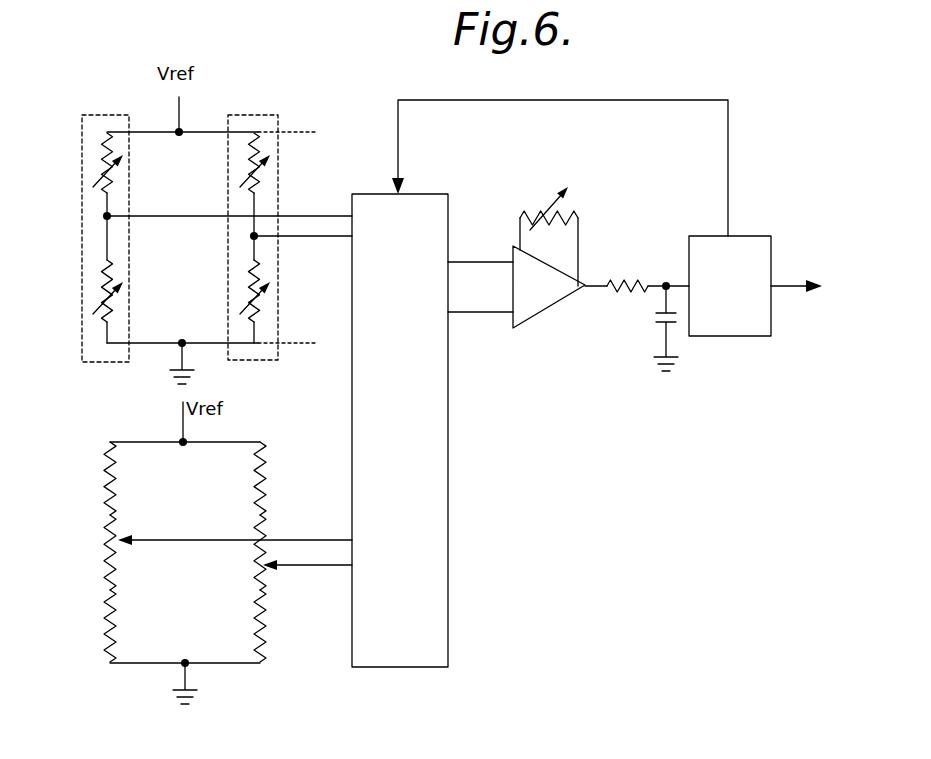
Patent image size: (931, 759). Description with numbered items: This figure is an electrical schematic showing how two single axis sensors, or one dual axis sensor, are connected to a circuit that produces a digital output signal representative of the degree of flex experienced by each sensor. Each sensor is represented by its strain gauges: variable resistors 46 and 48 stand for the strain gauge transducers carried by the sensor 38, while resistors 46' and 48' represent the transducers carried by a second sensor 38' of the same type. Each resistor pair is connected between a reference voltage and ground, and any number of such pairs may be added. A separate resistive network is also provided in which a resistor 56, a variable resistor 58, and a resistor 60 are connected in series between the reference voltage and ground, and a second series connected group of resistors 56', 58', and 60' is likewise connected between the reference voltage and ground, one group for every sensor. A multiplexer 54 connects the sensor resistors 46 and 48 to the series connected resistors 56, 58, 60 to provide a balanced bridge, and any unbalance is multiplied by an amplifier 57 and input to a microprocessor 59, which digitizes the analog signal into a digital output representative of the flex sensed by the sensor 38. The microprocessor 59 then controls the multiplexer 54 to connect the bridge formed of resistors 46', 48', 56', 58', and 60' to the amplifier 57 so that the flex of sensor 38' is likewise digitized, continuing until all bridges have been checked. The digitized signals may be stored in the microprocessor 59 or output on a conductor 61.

The sensor 38 is at (86, 213).
The second sensor 38' is at (272, 210).
The variable resistor 46 is at (79, 163).
The variable resistor 48 is at (79, 291).
The resistor 46' is at (290, 163).
The resistor 48' is at (287, 291).
The multiplexer 54 is at (449, 424).
The resistor 56 is at (79, 478).
The variable resistor 58 is at (80, 552).
The resistor 60 is at (81, 626).
The resistor 56' is at (289, 478).
The variable resistor 58' is at (294, 560).
The resistor 60' is at (294, 626).
The amplifier 57 is at (530, 319).
The microprocessor 59 is at (722, 337).
The conductor 61 is at (802, 284).